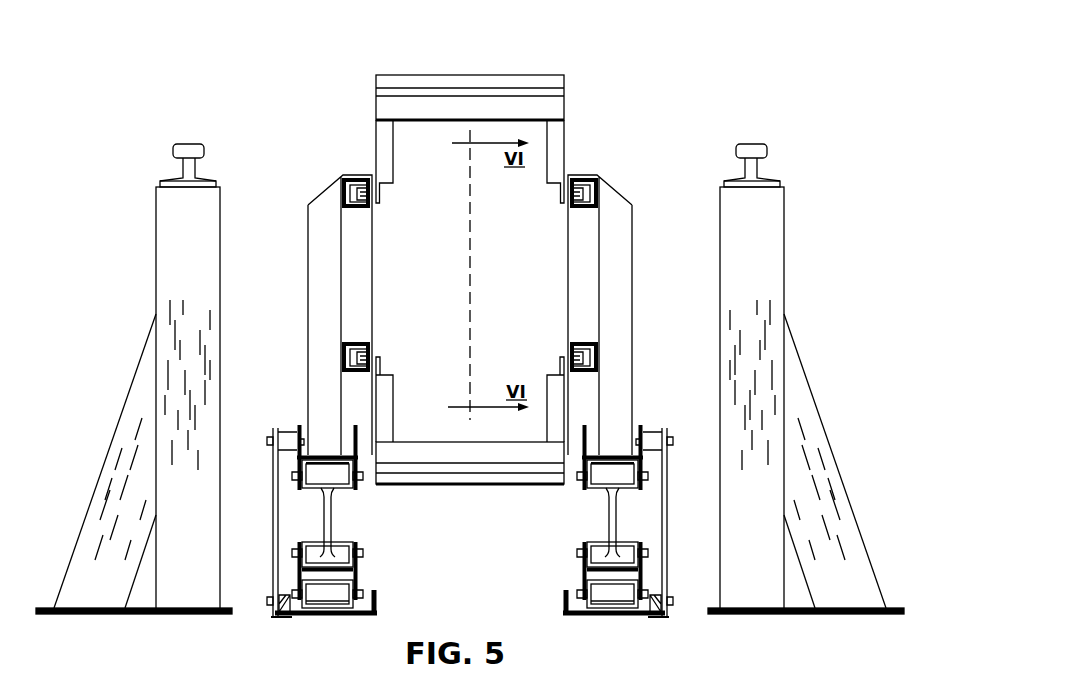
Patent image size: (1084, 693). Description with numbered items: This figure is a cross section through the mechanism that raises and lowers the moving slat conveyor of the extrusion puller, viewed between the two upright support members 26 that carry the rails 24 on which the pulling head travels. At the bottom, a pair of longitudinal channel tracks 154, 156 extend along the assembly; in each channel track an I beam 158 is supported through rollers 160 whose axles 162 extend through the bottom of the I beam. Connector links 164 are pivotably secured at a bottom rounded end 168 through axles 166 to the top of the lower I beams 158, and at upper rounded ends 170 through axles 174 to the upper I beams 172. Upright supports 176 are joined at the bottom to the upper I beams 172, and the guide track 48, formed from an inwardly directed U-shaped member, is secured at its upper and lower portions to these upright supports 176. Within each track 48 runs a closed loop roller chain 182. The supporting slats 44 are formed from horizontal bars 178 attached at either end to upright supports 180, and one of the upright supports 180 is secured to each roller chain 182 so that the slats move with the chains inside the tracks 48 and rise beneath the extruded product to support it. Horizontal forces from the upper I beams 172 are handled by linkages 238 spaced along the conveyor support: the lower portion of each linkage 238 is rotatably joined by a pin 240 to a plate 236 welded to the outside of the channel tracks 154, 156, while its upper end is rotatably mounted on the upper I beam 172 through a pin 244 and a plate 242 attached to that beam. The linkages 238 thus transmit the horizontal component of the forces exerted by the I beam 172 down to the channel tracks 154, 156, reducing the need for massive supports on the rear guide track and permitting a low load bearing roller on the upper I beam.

The rails 24 is at (201, 149).
The upright support members 26 is at (170, 270).
The supporting slats 44 is at (553, 67).
The guide track 48 is at (356, 208).
The channel track 154 is at (378, 610).
The channel track 156 is at (563, 608).
The I beam 158 is at (298, 550).
The rollers 160 is at (348, 587).
The axles 162 is at (298, 592).
The connector links 164 is at (333, 512).
The axles 166 is at (298, 555).
The bottom rounded end 168 is at (342, 545).
The upper rounded ends 170 is at (312, 489).
The upper I beams 172 is at (297, 428).
The axles 174 is at (357, 477).
The upright supports 176 is at (318, 292).
The horizontal bars 178 is at (425, 81).
The upright supports 180 is at (388, 141).
The roller chain 182 is at (372, 203).
The plate 236 is at (280, 615).
The linkages 238 is at (274, 480).
The pin 240 is at (268, 600).
The plate 242 is at (282, 448).
The pin 244 is at (268, 440).